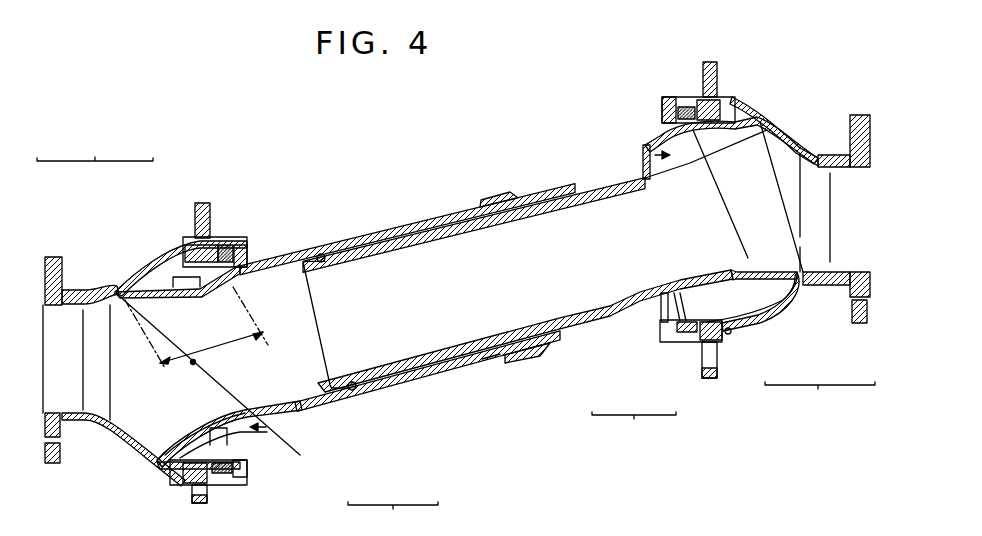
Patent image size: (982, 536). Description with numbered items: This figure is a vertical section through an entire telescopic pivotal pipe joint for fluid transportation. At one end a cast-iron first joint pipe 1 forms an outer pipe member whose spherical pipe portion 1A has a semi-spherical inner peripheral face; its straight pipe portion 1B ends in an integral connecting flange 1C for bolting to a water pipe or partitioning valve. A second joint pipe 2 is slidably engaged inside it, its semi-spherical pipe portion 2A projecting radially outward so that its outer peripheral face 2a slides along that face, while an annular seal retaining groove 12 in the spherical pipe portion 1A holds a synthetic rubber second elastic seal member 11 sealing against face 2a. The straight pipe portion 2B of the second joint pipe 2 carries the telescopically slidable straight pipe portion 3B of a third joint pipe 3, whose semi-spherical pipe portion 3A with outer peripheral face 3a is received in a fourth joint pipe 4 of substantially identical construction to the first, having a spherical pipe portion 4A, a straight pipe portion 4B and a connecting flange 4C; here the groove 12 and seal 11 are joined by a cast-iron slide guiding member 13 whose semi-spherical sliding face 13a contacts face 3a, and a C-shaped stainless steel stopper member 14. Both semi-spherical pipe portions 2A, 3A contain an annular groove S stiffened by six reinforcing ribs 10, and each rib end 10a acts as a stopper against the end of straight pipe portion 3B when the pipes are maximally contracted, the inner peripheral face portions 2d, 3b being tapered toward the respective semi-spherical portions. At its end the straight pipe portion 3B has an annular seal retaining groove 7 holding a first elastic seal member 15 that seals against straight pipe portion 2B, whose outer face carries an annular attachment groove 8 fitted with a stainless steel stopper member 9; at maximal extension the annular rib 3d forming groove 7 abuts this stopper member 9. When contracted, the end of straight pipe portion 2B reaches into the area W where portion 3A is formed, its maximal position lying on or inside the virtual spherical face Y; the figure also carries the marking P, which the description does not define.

The first joint pipe 1 is at (820, 398).
The spherical pipe portion 1A is at (760, 328).
The straight pipe portion 1B is at (842, 292).
The connecting flange 1C is at (858, 324).
The second joint pipe 2 is at (634, 428).
The semi-spherical pipe portion 2A is at (705, 330).
The straight pipe portion 2B is at (616, 312).
The outer peripheral face 2a is at (643, 145).
The inner peripheral face portion 2d is at (745, 272).
The third joint pipe 3 is at (393, 517).
The semi-spherical pipe portion 3A is at (270, 445).
The straight pipe portion 3B is at (398, 388).
The outer peripheral face 3a is at (260, 440).
The inner peripheral face portion 3b is at (184, 445).
The annular rib 3d is at (493, 358).
The fourth joint pipe 4 is at (95, 149).
The spherical pipe portion 4A is at (123, 263).
The straight pipe portion 4B is at (78, 292).
The connecting flange 4C is at (53, 257).
The annular seal retaining groove 7 is at (528, 352).
The annular attachment groove 8 is at (354, 390).
The stopper member 9 is at (324, 257).
The reinforcing ribs 10 is at (158, 277).
The one end of reinforcing rib 10a is at (203, 298).
The second elastic seal member 11 is at (187, 474).
The annular seal retaining groove 12 is at (729, 335).
The slide guiding member 13 is at (233, 262).
The semi-spherical sliding face 13a is at (221, 458).
The C-shaped stopper member 14 is at (249, 262).
The first elastic seal member 15 is at (490, 198).
The annular groove S is at (268, 427).
The pivot point P is at (193, 362).
The area W is at (262, 338).
The virtual spherical face Y is at (97, 318).